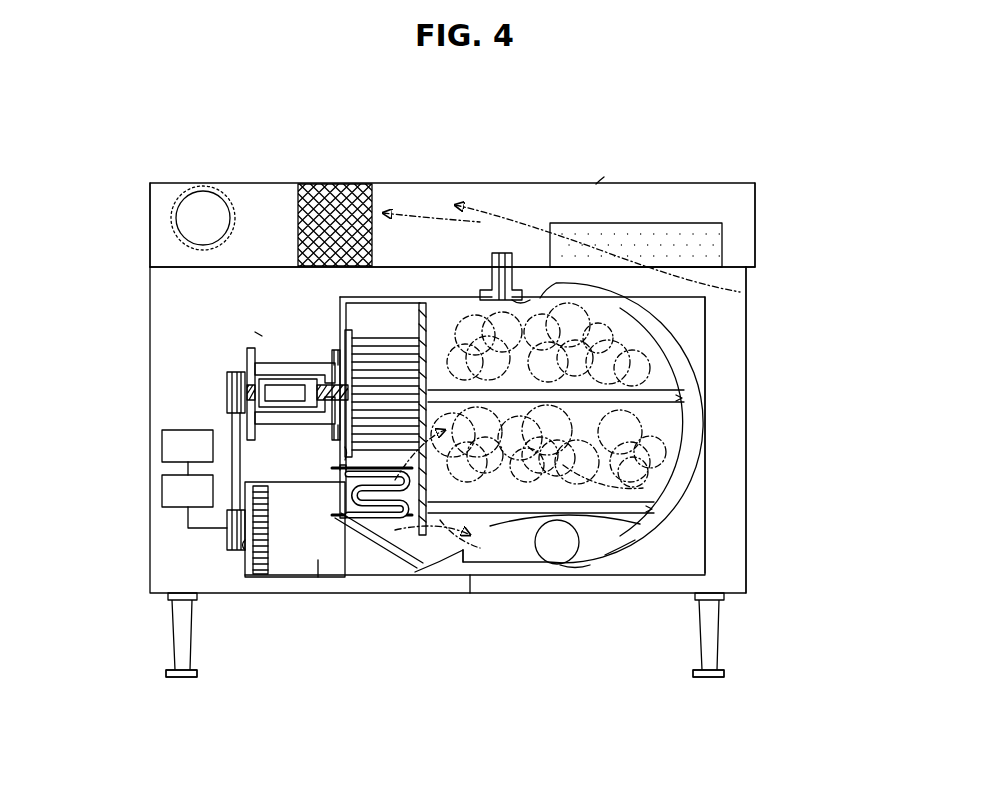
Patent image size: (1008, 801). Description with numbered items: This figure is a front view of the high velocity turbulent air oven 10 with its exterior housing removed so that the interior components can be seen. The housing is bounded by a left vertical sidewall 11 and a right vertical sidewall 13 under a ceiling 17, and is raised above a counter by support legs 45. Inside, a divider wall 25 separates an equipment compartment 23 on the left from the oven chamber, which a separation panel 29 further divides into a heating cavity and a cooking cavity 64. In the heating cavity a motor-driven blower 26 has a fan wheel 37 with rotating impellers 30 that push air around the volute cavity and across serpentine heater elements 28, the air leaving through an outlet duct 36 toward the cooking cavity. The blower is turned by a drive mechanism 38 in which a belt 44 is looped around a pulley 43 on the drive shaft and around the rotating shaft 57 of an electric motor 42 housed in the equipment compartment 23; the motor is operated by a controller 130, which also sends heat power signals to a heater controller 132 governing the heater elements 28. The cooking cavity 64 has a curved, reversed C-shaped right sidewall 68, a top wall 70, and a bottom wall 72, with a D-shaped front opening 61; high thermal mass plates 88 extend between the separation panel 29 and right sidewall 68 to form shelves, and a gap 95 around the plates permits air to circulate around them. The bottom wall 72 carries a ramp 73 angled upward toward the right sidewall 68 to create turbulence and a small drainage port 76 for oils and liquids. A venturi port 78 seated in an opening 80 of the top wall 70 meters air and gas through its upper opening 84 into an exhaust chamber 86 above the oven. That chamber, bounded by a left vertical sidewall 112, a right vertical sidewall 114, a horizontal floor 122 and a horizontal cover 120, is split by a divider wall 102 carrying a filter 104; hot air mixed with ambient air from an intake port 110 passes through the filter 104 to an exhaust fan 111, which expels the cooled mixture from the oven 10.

The high velocity turbulent air oven 10 is at (456, 416).
The left vertical sidewall 11 is at (150, 452).
The right vertical sidewall 13 is at (747, 362).
The ceiling 17 is at (600, 184).
The equipment compartment 23 is at (208, 292).
The divider wall 25 is at (318, 560).
The motor-driven blower 26 is at (197, 502).
The heater elements 28 is at (366, 520).
The separation panel 29 is at (434, 306).
The rotating impellers 30 is at (352, 330).
The outlet duct 36 is at (345, 462).
The fan wheel 37 is at (345, 450).
The drive mechanism 38 is at (262, 336).
The electric motor 42 is at (288, 580).
The pulley 43 is at (228, 382).
The belt 44 is at (240, 428).
The support legs 45 is at (186, 677).
The rotating shaft 57 is at (245, 548).
The front opening 61 is at (612, 570).
The cooking cavity 64 is at (625, 560).
The right sidewall 68 is at (690, 460).
The top wall 70 is at (560, 289).
The bottom wall 72 is at (580, 580).
The ramp 73 is at (470, 546).
The drainage port 76 is at (480, 586).
The venturi port 78 is at (502, 210).
The opening 80 is at (514, 300).
The opening 84 is at (497, 255).
The exhaust chamber 86 is at (750, 204).
The high thermal mass plates 88 is at (690, 396).
The gap 95 is at (428, 392).
The divider wall 102 is at (326, 198).
The filter 104 is at (350, 160).
The intake port 110 is at (672, 237).
The exhaust fan 111 is at (208, 190).
The left vertical sidewall 112 is at (150, 196).
The right vertical sidewall 114 is at (755, 262).
The horizontal cover 120 is at (661, 129).
The horizontal floor 122 is at (746, 290).
The controller 130 is at (194, 501).
The heater controller 132 is at (187, 452).